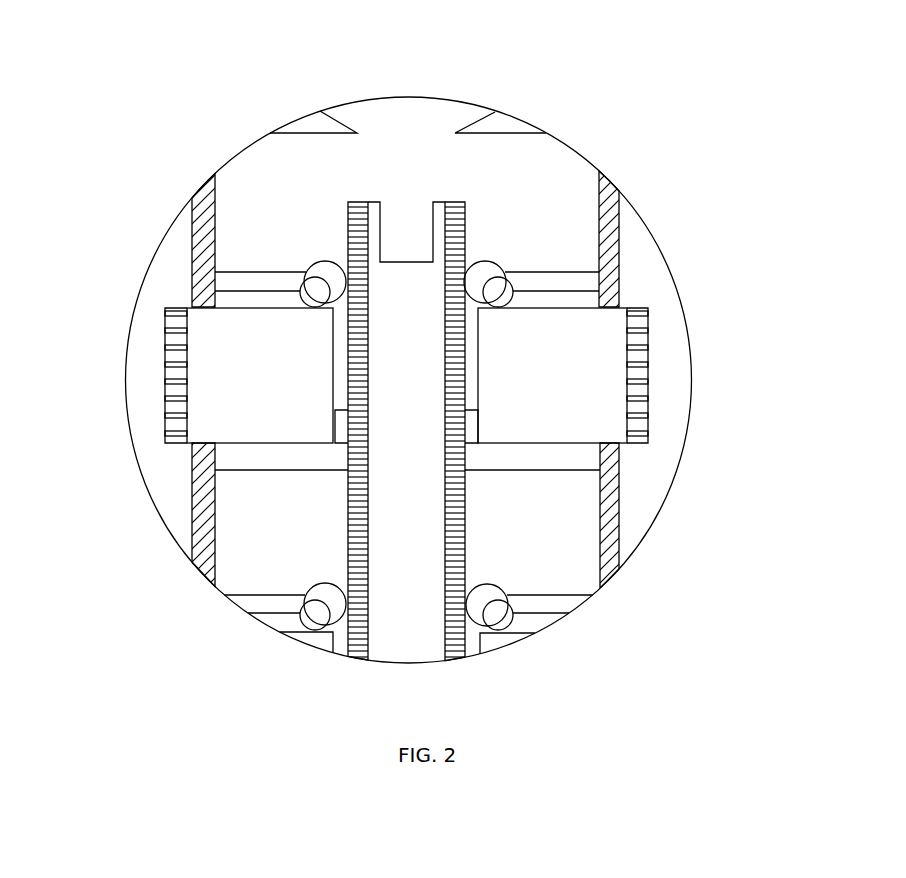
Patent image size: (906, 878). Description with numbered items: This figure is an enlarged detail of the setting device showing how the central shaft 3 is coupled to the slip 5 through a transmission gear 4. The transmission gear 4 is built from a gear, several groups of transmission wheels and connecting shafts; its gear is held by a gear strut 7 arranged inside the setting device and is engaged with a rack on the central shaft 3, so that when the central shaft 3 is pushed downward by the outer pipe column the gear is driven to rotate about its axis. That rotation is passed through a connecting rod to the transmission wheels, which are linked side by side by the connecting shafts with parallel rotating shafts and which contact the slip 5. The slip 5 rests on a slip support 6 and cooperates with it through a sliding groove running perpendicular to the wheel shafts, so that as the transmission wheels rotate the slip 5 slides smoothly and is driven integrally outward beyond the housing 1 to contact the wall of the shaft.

The housing 1 is at (193, 238).
The central shaft 3 is at (467, 225).
The transmission gear 4 is at (320, 258).
The slip 5 is at (647, 408).
The slip support 6 is at (565, 472).
The gear strut 7 is at (270, 270).